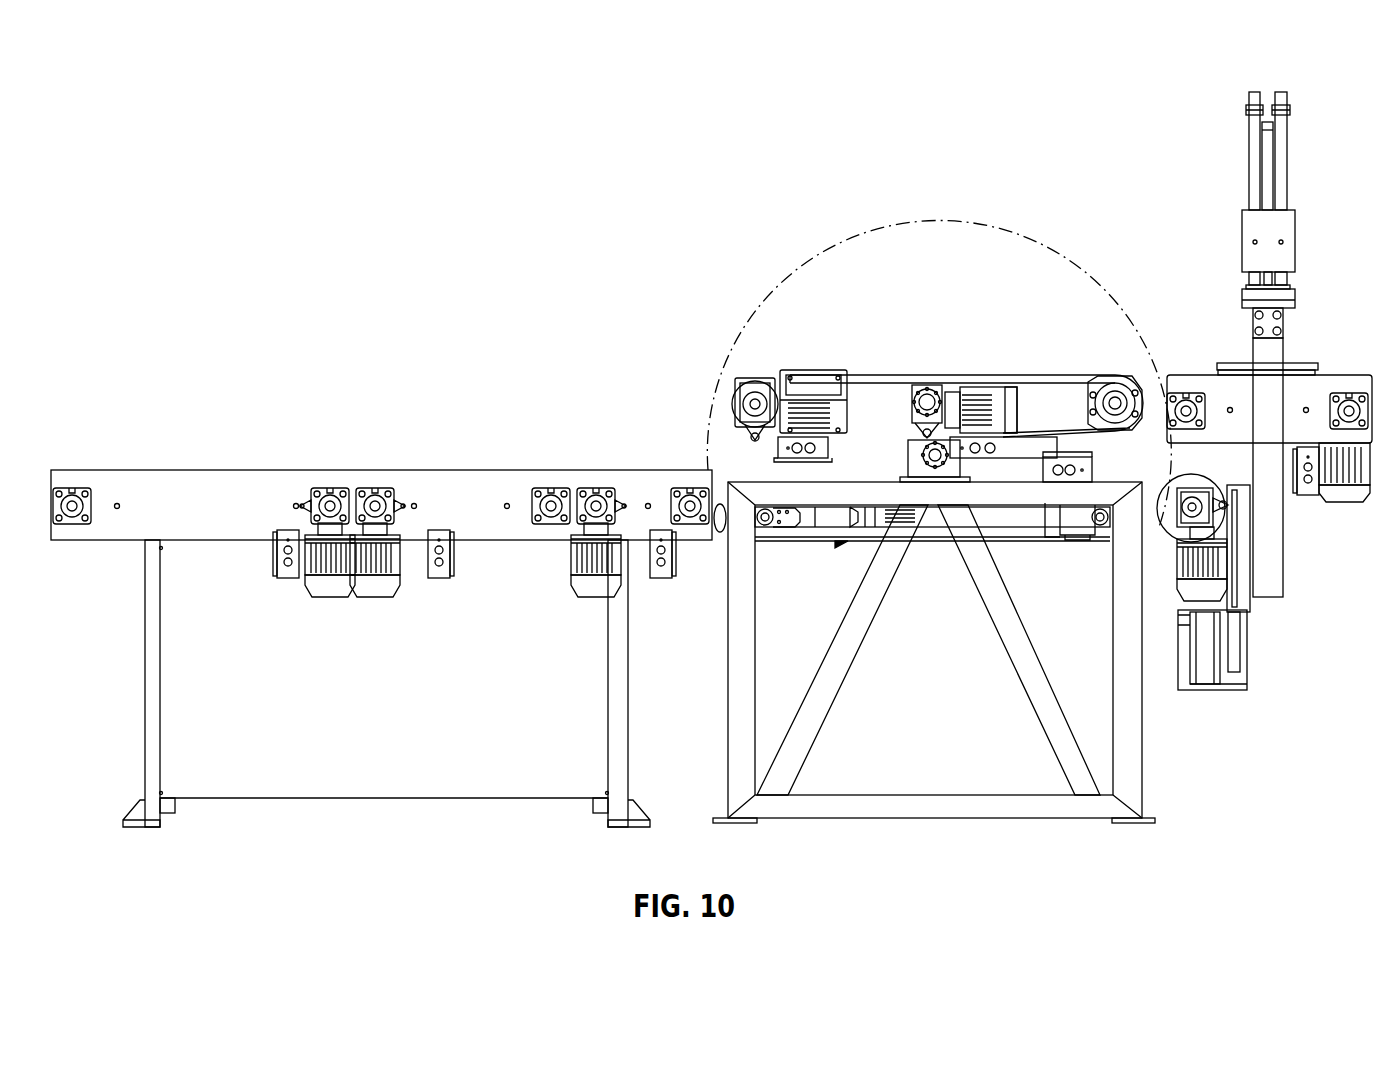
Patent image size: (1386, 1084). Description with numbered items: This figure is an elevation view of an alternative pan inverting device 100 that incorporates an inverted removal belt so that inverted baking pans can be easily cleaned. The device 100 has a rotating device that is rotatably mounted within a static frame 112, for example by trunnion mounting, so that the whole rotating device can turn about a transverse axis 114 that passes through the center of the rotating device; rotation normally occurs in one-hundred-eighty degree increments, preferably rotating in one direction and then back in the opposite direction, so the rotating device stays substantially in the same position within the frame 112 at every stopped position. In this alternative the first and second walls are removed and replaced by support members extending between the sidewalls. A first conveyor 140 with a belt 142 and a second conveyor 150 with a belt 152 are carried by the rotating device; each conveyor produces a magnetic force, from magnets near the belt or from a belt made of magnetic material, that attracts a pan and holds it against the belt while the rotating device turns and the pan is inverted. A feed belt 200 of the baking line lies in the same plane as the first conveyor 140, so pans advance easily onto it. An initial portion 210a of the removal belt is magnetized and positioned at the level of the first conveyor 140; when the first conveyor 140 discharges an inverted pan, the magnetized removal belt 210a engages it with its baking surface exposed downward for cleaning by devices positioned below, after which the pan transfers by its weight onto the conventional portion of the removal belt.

The pan inverting device 100 is at (1085, 244).
The static frame 112 is at (1131, 770).
The transverse axis 114 is at (935, 458).
The first conveyor 140 is at (851, 542).
The belt 142 is at (938, 542).
The second conveyor 150 is at (920, 374).
The belt 152 is at (1017, 373).
The feed belt 200 is at (495, 462).
The initial portion of the removal belt 210a is at (1222, 449).